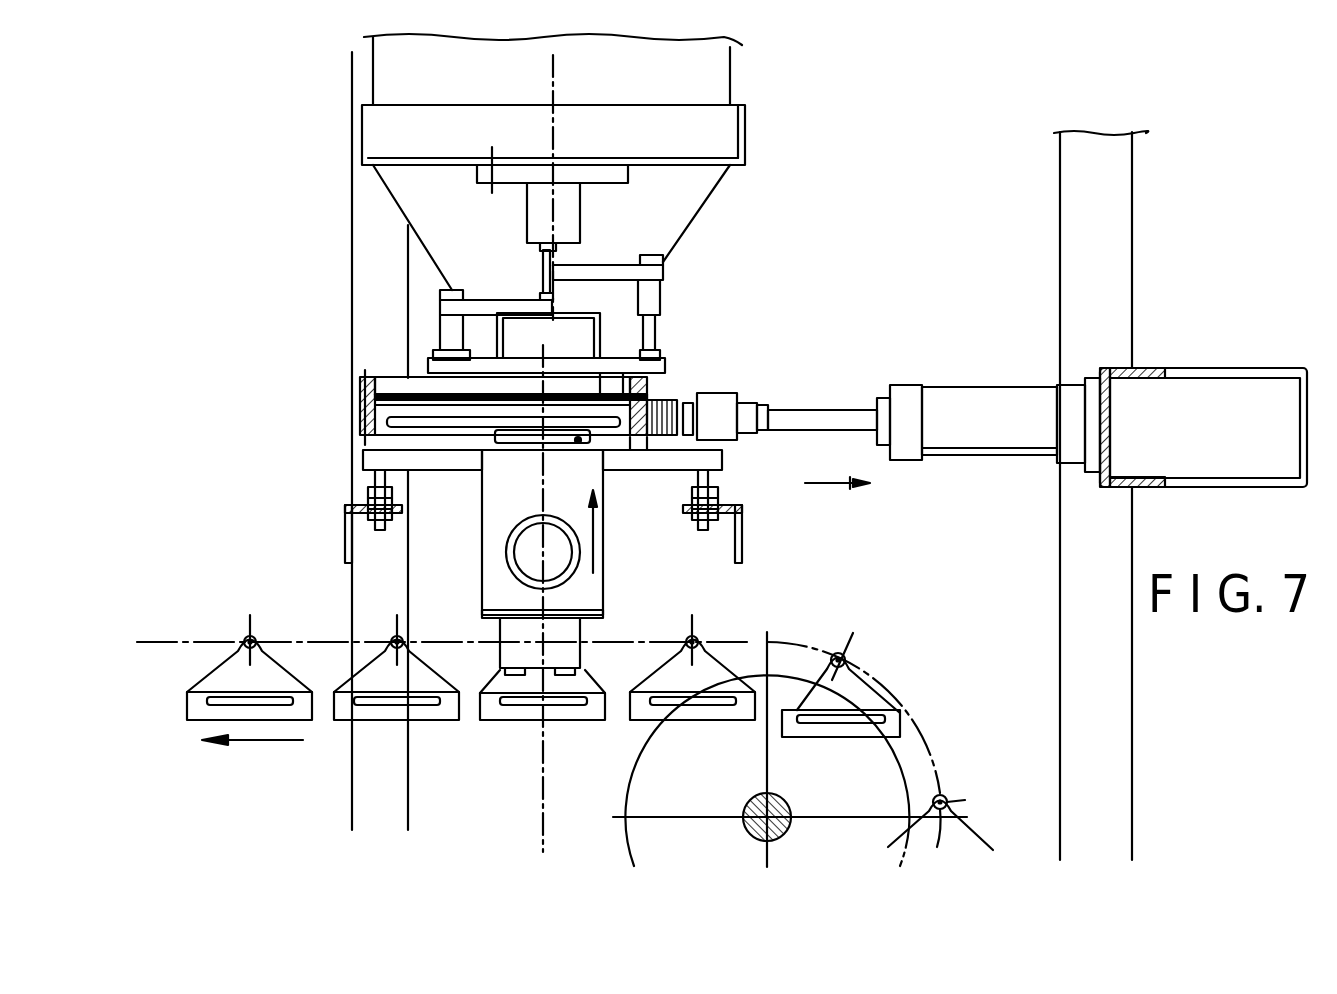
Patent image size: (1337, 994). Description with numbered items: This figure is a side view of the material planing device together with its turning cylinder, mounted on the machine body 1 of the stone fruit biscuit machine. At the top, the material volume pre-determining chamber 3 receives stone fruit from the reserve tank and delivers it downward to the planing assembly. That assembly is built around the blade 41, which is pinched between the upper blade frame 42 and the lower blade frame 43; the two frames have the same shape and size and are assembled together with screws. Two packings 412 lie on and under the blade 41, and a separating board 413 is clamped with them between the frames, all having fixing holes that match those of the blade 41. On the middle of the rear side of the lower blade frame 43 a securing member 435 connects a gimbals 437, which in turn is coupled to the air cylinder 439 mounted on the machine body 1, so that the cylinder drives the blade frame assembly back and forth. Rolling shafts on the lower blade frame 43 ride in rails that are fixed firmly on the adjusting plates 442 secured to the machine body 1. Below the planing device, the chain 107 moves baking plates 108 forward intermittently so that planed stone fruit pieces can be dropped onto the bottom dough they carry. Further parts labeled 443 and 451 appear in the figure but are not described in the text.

The machine body 1 is at (362, 278).
The material volume pre-determining chamber 3 is at (717, 77).
The blade 41 is at (612, 390).
The upper blade frame 42 is at (647, 387).
The lower blade frame 43 is at (637, 410).
The chain 107 is at (163, 643).
The baking plates 108 is at (508, 712).
The packings 412 is at (403, 393).
The separating board 413 is at (398, 403).
The securing member 435 is at (657, 405).
The gimbals 437 is at (722, 413).
The air cylinder 439 is at (977, 405).
The adjusting plates 442 is at (452, 465).
The fastening bolt 443 is at (705, 520).
The stop pin 451 is at (577, 367).